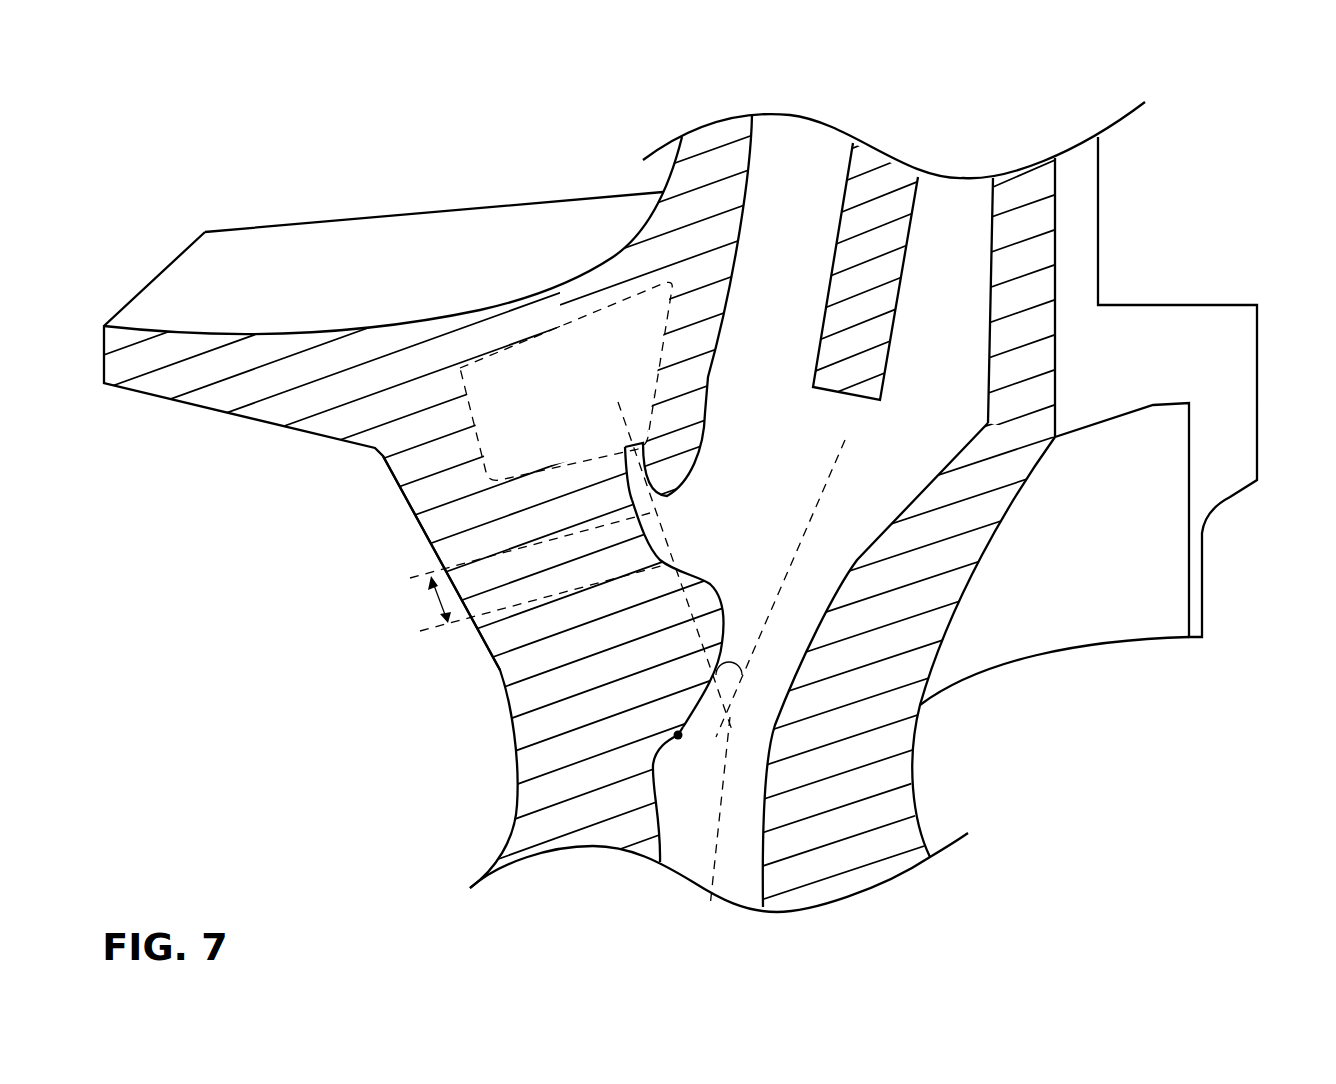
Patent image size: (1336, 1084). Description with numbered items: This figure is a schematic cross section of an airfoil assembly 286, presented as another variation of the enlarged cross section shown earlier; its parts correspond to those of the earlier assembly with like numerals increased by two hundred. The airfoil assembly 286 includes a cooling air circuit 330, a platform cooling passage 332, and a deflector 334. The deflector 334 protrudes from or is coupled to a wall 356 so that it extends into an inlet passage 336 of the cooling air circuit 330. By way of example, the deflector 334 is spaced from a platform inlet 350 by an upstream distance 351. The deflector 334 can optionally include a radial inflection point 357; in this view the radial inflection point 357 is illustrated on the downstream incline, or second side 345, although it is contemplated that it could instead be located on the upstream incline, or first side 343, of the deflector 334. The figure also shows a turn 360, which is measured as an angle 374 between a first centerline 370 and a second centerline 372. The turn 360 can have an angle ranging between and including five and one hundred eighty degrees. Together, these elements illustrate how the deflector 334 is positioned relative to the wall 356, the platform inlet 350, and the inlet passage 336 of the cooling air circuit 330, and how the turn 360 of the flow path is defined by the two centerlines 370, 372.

The airfoil assembly 286 is at (1203, 144).
The cooling air circuit 330 is at (848, 578).
The platform cooling passage 332 is at (632, 487).
The deflector 334 is at (698, 706).
The inlet passage 336 is at (765, 825).
The first side 343 is at (728, 664).
The second side 345 is at (732, 718).
The platform inlet 350 is at (703, 580).
The upstream distance 351 is at (436, 598).
The wall 356 is at (658, 806).
The radial inflection point 357 is at (673, 735).
The turn 360 is at (672, 531).
The first centerline 370 is at (705, 807).
The second centerline 372 is at (715, 634).
The angle 374 is at (742, 668).